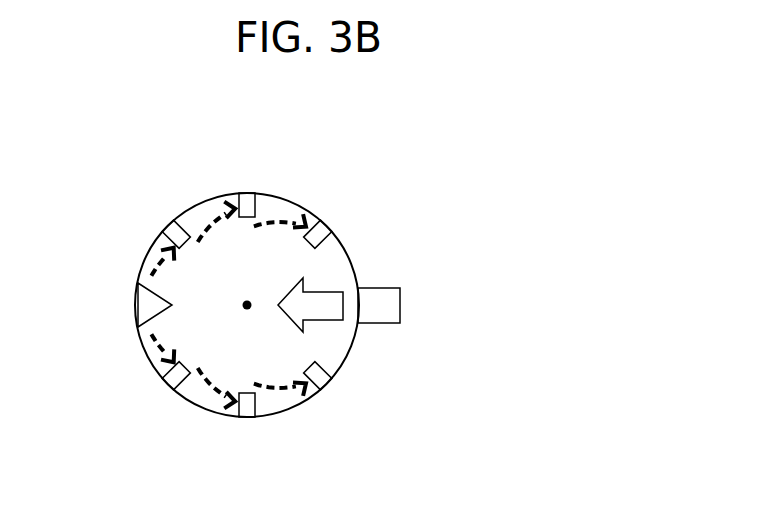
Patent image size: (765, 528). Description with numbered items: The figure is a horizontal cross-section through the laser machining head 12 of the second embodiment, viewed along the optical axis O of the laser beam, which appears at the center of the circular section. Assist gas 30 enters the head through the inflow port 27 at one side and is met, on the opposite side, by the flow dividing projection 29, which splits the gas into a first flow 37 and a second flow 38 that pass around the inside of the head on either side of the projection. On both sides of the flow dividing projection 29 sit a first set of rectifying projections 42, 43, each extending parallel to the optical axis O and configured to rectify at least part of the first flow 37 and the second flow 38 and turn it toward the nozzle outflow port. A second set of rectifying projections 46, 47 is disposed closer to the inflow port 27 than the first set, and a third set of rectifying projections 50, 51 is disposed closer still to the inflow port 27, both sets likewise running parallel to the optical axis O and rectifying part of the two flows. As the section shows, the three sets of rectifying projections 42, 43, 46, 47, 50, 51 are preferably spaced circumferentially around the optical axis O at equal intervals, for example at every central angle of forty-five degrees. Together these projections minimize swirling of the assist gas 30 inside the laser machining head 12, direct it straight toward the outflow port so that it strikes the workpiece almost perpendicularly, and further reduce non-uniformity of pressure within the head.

The laser machining head 12 is at (426, 159).
The optical axis O is at (250, 308).
The inflow port 27 is at (385, 323).
The flow dividing projection 29 is at (142, 290).
The assist gas 30 is at (318, 293).
The first flow 37 is at (273, 218).
The second flow 38 is at (275, 390).
The first rectifying projection 42 is at (183, 244).
The first rectifying projection 43 is at (183, 366).
The second rectifying projection 46 is at (240, 218).
The second rectifying projection 47 is at (241, 394).
The third rectifying projection 50 is at (324, 228).
The third rectifying projection 51 is at (318, 380).